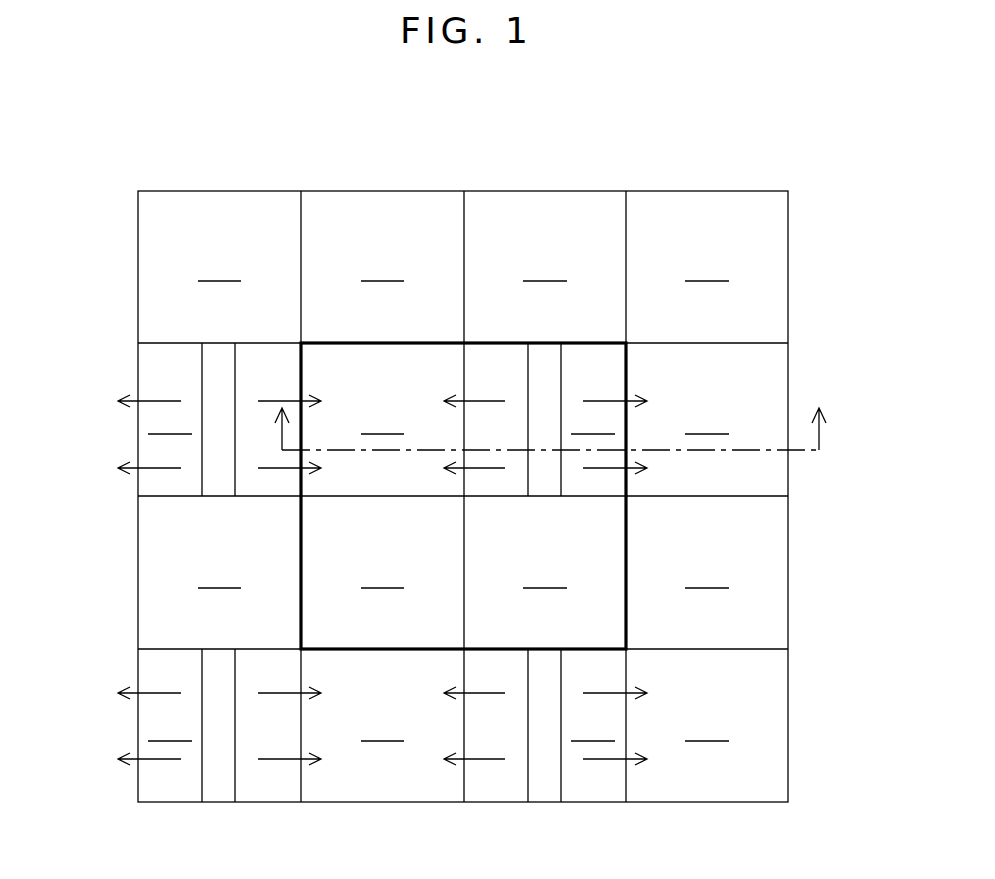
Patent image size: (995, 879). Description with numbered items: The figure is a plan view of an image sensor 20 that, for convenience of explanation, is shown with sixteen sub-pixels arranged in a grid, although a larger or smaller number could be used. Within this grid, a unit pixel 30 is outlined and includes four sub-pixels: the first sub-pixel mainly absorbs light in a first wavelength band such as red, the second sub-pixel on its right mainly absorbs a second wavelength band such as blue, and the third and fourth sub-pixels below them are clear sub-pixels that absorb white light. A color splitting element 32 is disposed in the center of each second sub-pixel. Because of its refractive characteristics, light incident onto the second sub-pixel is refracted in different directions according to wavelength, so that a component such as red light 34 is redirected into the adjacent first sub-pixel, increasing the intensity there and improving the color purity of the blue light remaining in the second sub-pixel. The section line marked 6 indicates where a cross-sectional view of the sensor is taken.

The image sensor 20 is at (118, 182).
The unit pixel 30 is at (301, 530).
The color splitting element 32 is at (547, 368).
The red light 34 is at (484, 401).
The section line 6-6' 6 is at (550, 412).